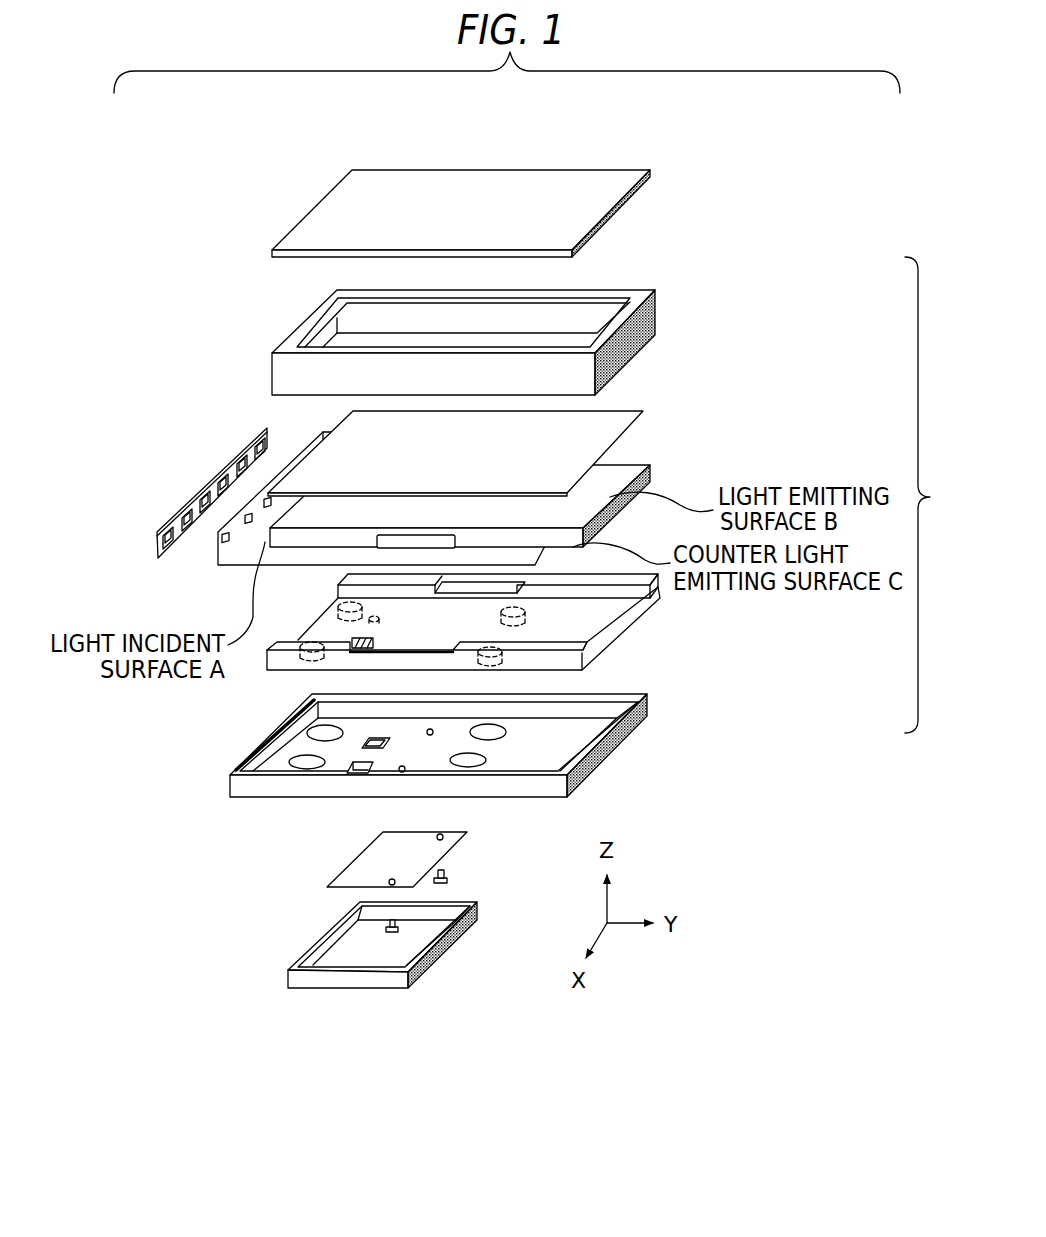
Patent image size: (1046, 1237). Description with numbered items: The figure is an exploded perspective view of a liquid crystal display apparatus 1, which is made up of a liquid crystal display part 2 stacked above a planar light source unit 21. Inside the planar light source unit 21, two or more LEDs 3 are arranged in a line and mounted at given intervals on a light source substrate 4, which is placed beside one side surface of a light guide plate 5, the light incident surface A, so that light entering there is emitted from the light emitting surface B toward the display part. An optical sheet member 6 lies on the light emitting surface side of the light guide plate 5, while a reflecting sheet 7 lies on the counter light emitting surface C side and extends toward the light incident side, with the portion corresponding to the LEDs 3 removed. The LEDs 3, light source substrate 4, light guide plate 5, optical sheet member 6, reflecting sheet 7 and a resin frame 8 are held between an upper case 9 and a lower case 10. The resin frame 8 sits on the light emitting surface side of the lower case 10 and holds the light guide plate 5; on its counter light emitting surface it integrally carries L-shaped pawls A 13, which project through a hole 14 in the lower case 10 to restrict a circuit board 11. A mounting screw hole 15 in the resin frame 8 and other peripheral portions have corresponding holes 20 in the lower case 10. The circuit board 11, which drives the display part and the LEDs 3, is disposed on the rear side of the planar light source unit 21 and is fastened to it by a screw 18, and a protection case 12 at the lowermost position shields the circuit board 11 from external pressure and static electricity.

The liquid crystal display apparatus 1 is at (265, 172).
The liquid crystal display part 2 is at (650, 169).
The LEDs 3 is at (172, 523).
The light source substrate 4 is at (158, 553).
The light guide plate 5 is at (650, 467).
The optical sheet member 6 is at (643, 413).
The reflecting sheet 7 is at (224, 566).
The resin frame 8 is at (463, 622).
The upper case 9 is at (655, 292).
The lower case 10 is at (647, 698).
The circuit board 11 is at (467, 832).
The protection case 12 is at (358, 980).
The L-shaped pawl A 13 is at (355, 650).
The hole for the L-shaped pawl A 14 is at (357, 771).
The mounting screw hole 15 is at (492, 662).
The screw 18 is at (448, 875).
The holes 20 is at (493, 739).
The planar light source unit 21 is at (934, 495).